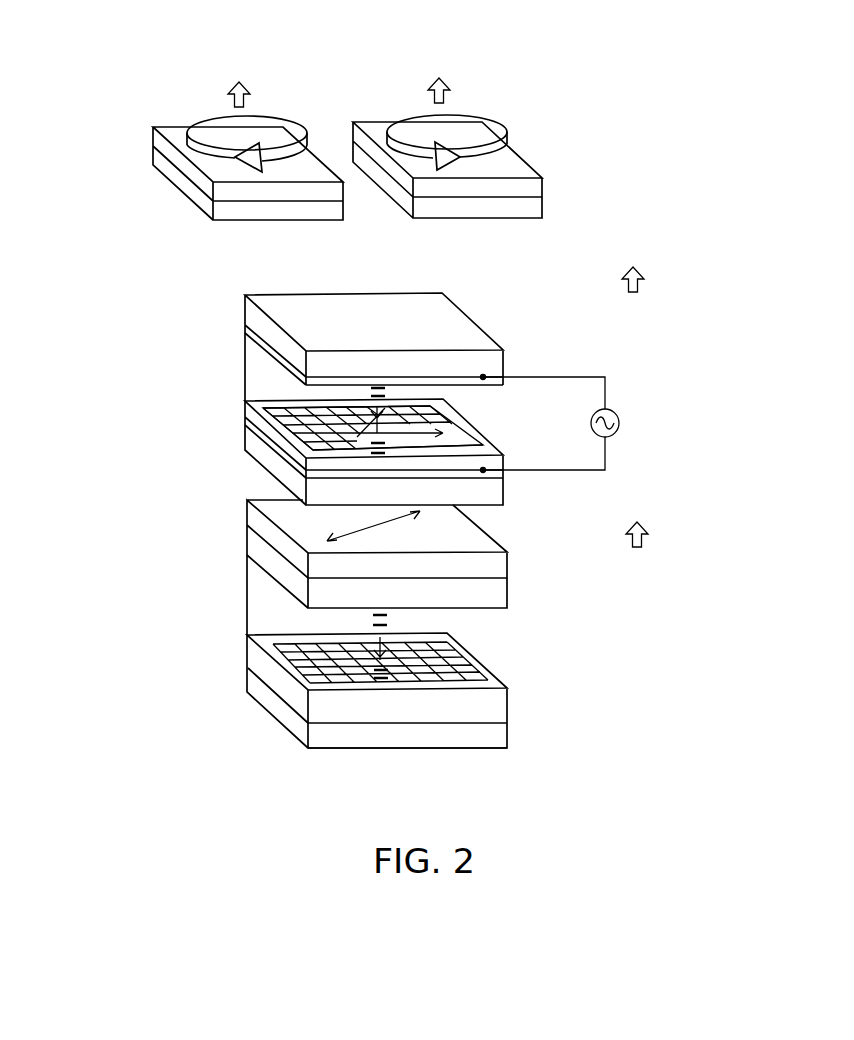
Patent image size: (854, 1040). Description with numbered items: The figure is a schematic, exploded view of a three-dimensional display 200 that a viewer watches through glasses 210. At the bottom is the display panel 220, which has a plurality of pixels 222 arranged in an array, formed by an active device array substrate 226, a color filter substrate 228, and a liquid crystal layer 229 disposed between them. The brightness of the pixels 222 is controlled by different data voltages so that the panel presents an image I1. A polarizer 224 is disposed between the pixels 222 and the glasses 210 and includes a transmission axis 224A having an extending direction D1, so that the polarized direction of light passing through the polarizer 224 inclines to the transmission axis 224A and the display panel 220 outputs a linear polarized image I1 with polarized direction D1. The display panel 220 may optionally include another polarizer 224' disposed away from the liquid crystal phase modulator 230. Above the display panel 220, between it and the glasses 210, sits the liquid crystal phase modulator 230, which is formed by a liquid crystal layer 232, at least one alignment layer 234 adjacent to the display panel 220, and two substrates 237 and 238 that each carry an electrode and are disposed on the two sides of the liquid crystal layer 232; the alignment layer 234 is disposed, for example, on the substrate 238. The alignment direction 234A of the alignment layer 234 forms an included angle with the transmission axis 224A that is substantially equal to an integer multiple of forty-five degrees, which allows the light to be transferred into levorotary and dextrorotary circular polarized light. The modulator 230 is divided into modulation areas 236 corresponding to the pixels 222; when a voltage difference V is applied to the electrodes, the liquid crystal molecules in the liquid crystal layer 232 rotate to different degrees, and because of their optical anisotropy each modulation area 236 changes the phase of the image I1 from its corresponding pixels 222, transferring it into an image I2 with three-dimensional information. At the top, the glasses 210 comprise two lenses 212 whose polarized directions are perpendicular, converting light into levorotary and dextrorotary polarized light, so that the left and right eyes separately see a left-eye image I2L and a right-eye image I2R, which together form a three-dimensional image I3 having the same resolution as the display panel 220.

The three-dimensional display 200 is at (668, 784).
The glasses 210 is at (685, 175).
The lenses 212 is at (142, 127).
The display panel 220 is at (494, 624).
The pixels 222 is at (483, 672).
The polarizer 224 is at (411, 567).
The another polarizer 224' is at (444, 735).
The transmission axis 224A is at (377, 527).
The active device array substrate 226 is at (482, 705).
The color filter substrate 228 is at (470, 595).
The liquid crystal layer 229 is at (499, 642).
The liquid crystal phase modulator 230 is at (492, 399).
The liquid crystal layer 232 is at (500, 430).
The alignment layer 234 is at (490, 463).
The alignment direction 234A is at (439, 421).
The modulation areas 236 is at (449, 414).
The substrate 237 is at (478, 362).
The substrate 238 is at (487, 491).
The image I1 is at (649, 534).
The image with three-dimensional information I2 is at (646, 280).
The left-eye image I2L is at (241, 80).
The right-eye image I2R is at (439, 77).
The three-dimensional image I3 is at (450, 43).
The extending direction D1 is at (363, 530).
The voltage difference V is at (561, 424).